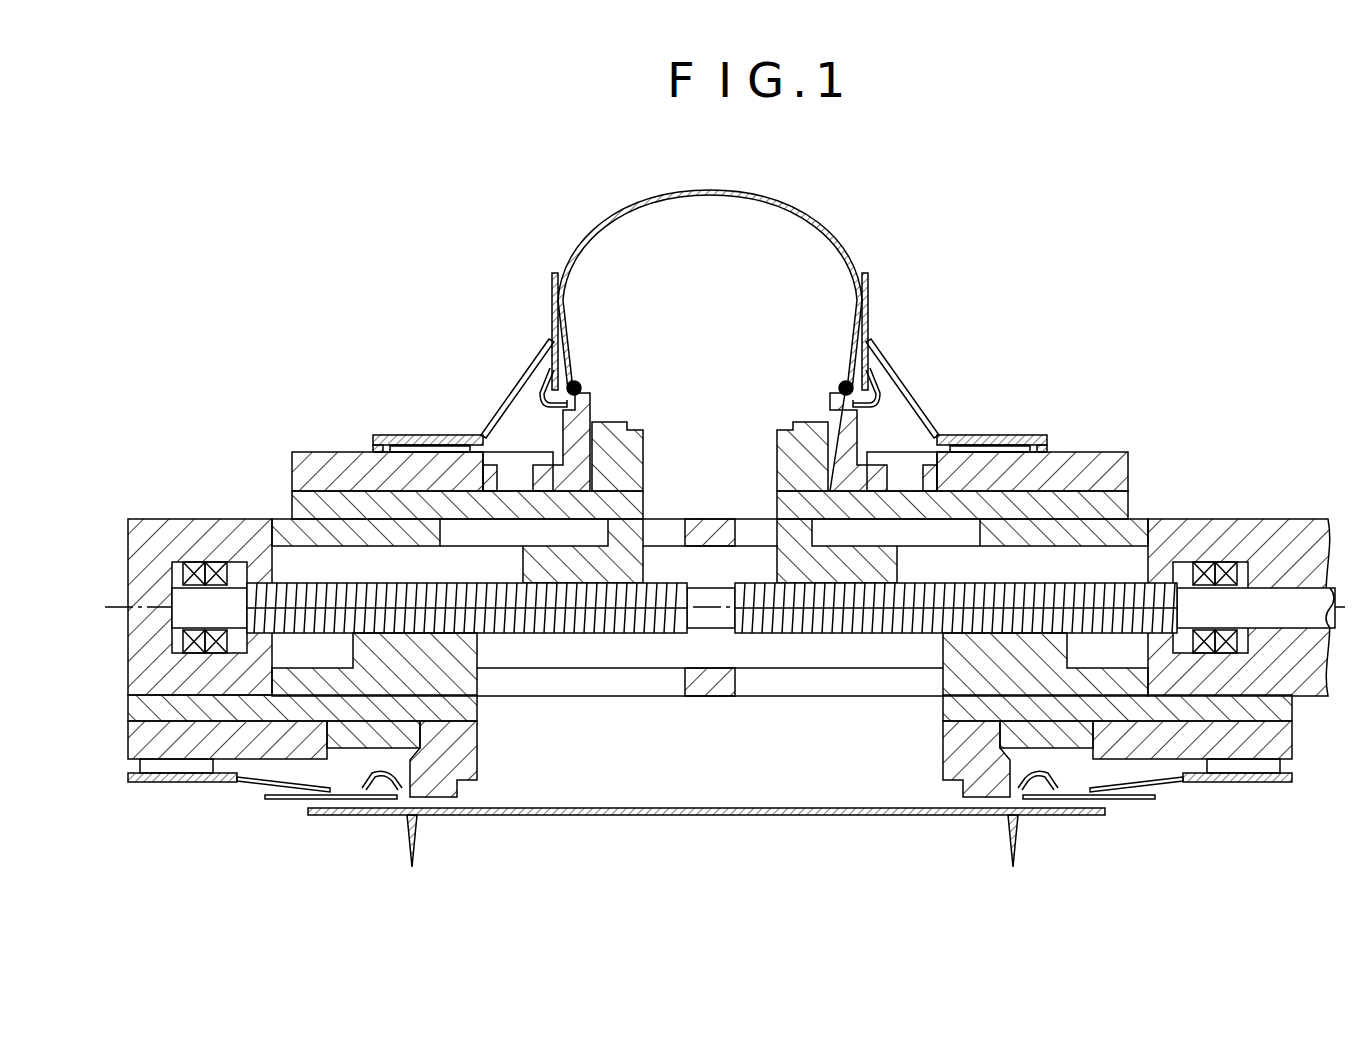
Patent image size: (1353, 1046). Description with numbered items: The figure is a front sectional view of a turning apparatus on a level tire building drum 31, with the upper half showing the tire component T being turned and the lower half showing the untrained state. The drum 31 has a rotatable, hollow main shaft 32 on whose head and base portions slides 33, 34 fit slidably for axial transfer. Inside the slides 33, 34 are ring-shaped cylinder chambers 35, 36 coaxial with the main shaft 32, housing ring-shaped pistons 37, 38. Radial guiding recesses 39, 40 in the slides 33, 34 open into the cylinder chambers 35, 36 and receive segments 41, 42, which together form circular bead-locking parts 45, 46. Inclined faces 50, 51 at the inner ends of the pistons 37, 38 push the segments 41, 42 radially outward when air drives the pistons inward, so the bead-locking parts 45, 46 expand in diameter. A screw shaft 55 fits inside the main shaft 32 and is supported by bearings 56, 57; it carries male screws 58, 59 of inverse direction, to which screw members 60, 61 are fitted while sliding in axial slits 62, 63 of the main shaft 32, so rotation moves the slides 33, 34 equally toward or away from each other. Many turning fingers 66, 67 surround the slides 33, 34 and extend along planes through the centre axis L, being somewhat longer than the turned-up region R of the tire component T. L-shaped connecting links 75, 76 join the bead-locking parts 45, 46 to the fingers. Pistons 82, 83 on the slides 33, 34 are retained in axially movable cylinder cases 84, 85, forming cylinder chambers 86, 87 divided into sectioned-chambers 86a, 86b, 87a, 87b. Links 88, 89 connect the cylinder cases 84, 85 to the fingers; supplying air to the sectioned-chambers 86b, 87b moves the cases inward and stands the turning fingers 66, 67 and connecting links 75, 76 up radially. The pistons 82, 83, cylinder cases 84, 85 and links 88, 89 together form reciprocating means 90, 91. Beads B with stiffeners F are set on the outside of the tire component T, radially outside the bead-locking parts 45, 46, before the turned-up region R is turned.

The tire building drum 31 is at (1105, 385).
The main shaft 32 is at (1280, 519).
The slide 33 is at (310, 452).
The slide 34 is at (1125, 470).
The cylinder chamber 35 is at (520, 470).
The cylinder chamber 36 is at (905, 470).
The piston 37 is at (605, 480).
The piston 38 is at (785, 465).
The guiding recess 39 is at (592, 430).
The guiding recess 40 is at (830, 415).
The segment 41 is at (480, 772).
The segment 42 is at (962, 772).
The bead-locking part 45 is at (590, 388).
The bead-locking part 46 is at (833, 398).
The inclined face 50 is at (450, 735).
The inclined face 51 is at (990, 735).
The screw shaft 55 is at (270, 583).
The bearing 56 is at (205, 562).
The bearing 57 is at (1195, 562).
The male screw 58 is at (670, 585).
The male screw 59 is at (740, 635).
The screw member 60 is at (478, 690).
The screw member 61 is at (942, 690).
The slit 62 is at (620, 700).
The slit 63 is at (780, 700).
The turning finger 66 is at (548, 288).
The turning finger 67 is at (870, 328).
The connecting link 75 is at (530, 380).
The connecting link 76 is at (892, 380).
The piston 82 is at (375, 440).
The piston 83 is at (1047, 440).
The cylinder case 84 is at (395, 435).
The cylinder case 85 is at (985, 435).
The cylinder chamber 86 is at (205, 790).
The cylinder sectioned-chamber 86a is at (170, 782).
The cylinder sectioned-chamber 86b is at (450, 435).
The cylinder chamber 87 is at (1232, 790).
The cylinder sectioned-chamber 87a is at (1270, 782).
The cylinder sectioned-chamber 87b is at (1078, 420).
The link 88 is at (520, 388).
The link 89 is at (905, 395).
The reciprocating means 90 is at (510, 320).
The reciprocating means 91 is at (940, 268).
The tire component T is at (775, 192).
The centre axis L is at (140, 600).
The turned-up region R is at (872, 305).
The stiffener F is at (845, 372).
The bead B is at (848, 388).